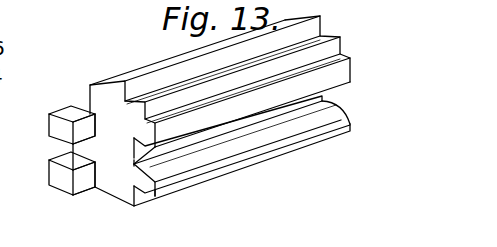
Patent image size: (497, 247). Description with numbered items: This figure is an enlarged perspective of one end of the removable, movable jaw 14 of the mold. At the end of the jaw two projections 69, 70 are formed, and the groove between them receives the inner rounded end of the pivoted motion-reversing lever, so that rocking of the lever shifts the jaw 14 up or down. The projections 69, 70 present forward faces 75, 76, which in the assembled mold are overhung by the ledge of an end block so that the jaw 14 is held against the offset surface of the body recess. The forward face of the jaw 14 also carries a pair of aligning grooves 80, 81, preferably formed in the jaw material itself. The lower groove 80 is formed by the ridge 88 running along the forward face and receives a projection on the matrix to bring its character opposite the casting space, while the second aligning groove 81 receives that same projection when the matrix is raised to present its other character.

The movable jaw 14 is at (138, 73).
The ridge 88 is at (240, 165).
The second aligning groove 81 is at (133, 165).
The lower aligning groove 80 is at (149, 199).
The projection 69 is at (55, 138).
The projection 70 is at (57, 179).
The forward face 75 is at (83, 130).
The forward face 76 is at (85, 193).